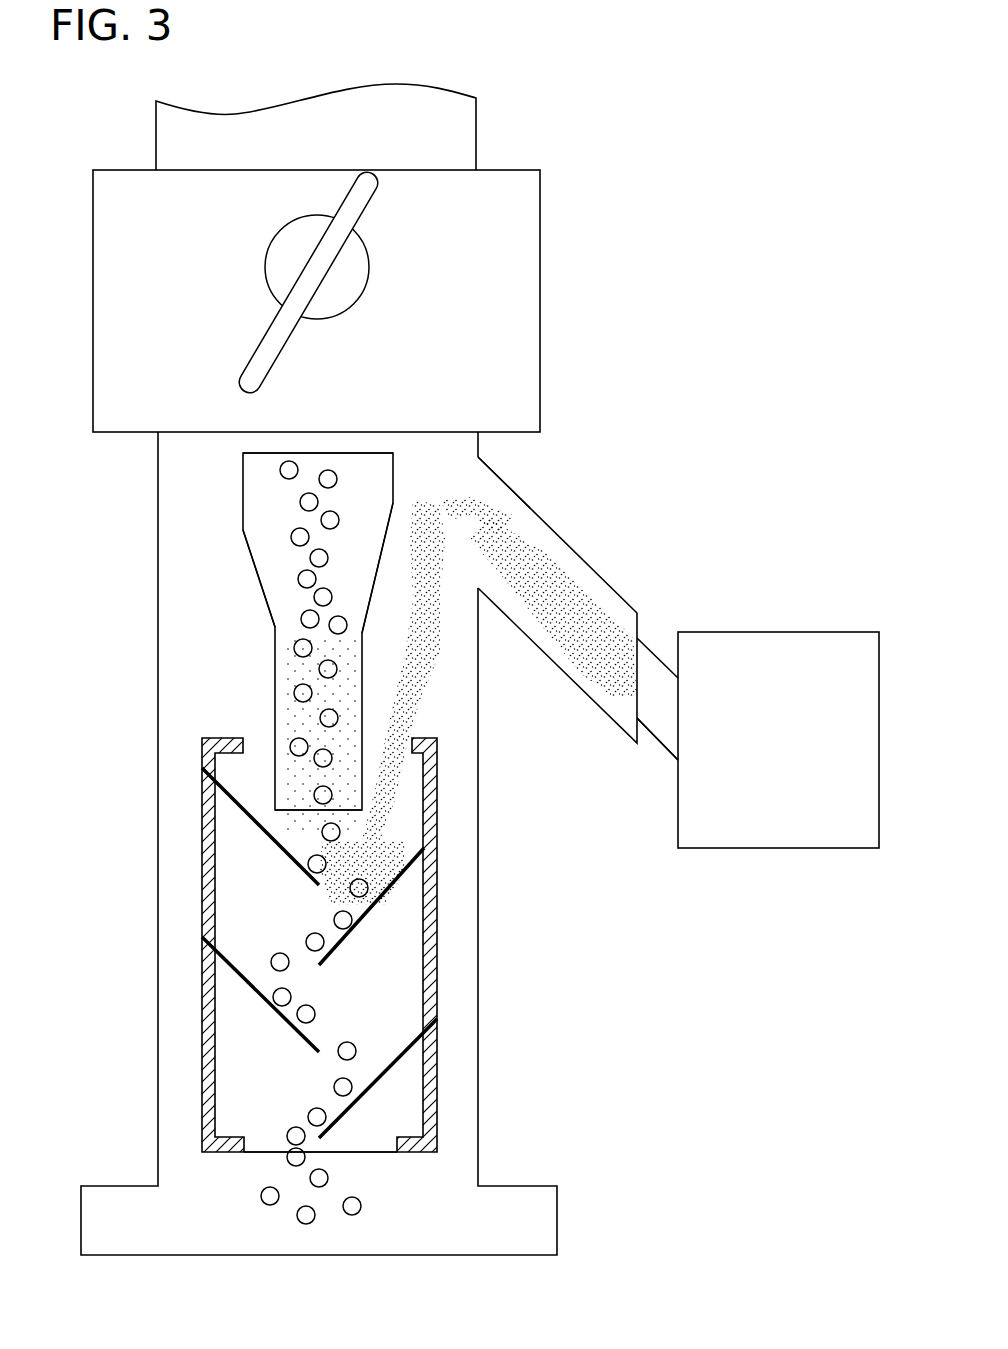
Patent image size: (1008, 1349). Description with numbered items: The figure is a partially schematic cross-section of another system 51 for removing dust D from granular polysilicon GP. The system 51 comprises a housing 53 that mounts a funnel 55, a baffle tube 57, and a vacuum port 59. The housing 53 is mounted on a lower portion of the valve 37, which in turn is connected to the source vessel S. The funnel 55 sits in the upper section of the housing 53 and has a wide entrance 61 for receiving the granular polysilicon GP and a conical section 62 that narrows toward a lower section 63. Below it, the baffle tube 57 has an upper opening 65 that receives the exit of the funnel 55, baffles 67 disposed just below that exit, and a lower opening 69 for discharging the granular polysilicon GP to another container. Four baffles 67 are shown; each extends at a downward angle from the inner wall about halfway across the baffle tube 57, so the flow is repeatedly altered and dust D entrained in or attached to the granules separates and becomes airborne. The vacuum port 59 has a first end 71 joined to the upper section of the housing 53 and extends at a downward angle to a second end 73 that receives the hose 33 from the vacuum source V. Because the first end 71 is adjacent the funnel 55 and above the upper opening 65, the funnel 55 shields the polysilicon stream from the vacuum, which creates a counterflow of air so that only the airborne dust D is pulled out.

The system 51 is at (648, 101).
The valve 37 is at (538, 306).
The source vessel S is at (332, 149).
The vacuum source V is at (765, 762).
The dust D is at (572, 595).
The granular polysilicon GP is at (294, 693).
The housing 53 is at (478, 977).
The funnel 55 is at (230, 500).
The baffle tube 57 is at (203, 1007).
The vacuum port 59 is at (545, 520).
The wide entrance 61 is at (264, 453).
The conical section 62 is at (247, 530).
The lower section 63 is at (290, 810).
The upper opening 65 is at (399, 737).
The baffles 67 is at (278, 845).
The lower opening 69 is at (378, 1140).
The first end 71 is at (495, 493).
The second end 73 is at (637, 613).
The hose 33 is at (660, 738).